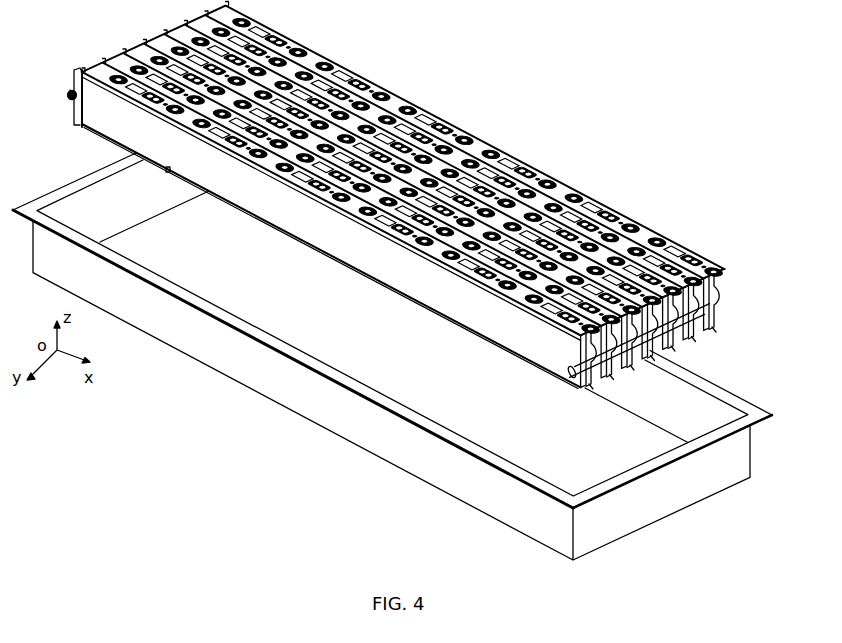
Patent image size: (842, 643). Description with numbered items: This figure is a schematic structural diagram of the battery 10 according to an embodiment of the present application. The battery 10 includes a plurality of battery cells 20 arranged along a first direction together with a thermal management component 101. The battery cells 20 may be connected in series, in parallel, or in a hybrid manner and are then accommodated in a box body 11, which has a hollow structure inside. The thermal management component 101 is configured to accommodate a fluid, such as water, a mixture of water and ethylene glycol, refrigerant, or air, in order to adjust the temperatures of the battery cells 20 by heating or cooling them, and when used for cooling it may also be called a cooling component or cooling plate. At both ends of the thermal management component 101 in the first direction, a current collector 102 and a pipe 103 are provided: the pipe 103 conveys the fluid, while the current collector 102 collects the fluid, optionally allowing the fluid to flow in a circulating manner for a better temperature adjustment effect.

The battery 10 is at (407, 213).
The box body 11 is at (323, 413).
The battery cells 20 is at (692, 251).
The thermal management component 101 is at (128, 128).
The current collector 102 is at (737, 290).
The pipe 103 is at (570, 374).